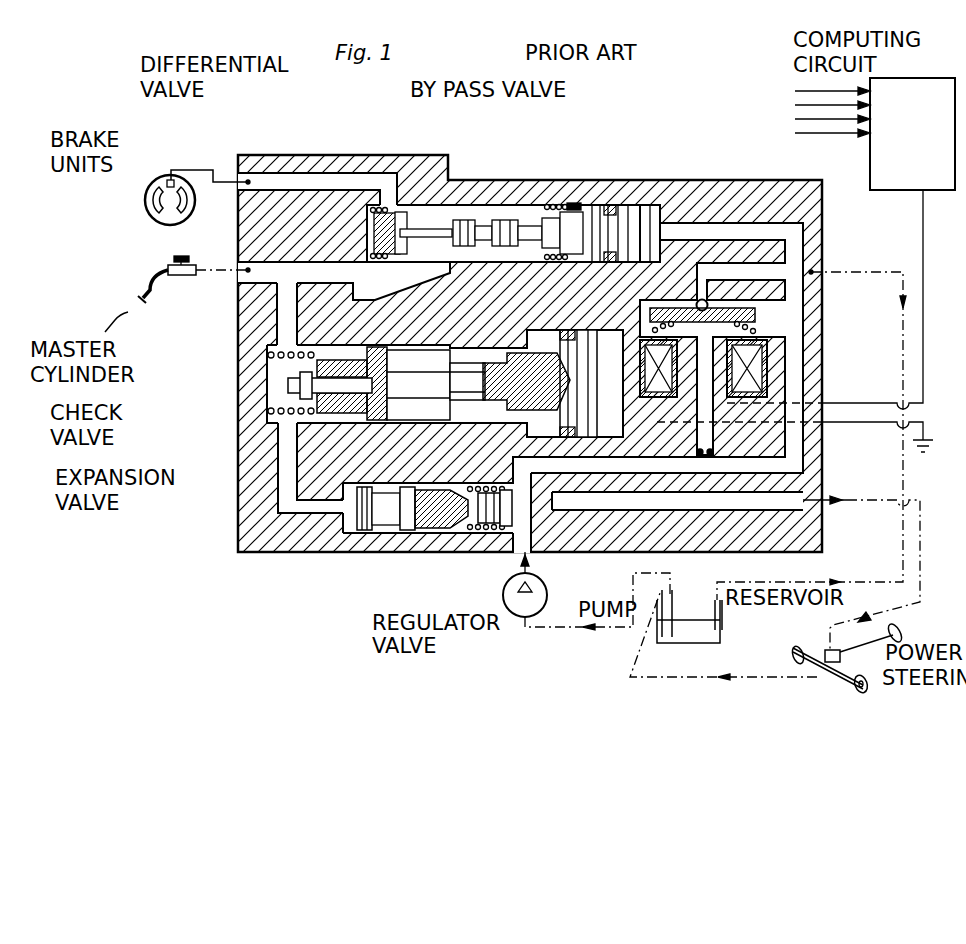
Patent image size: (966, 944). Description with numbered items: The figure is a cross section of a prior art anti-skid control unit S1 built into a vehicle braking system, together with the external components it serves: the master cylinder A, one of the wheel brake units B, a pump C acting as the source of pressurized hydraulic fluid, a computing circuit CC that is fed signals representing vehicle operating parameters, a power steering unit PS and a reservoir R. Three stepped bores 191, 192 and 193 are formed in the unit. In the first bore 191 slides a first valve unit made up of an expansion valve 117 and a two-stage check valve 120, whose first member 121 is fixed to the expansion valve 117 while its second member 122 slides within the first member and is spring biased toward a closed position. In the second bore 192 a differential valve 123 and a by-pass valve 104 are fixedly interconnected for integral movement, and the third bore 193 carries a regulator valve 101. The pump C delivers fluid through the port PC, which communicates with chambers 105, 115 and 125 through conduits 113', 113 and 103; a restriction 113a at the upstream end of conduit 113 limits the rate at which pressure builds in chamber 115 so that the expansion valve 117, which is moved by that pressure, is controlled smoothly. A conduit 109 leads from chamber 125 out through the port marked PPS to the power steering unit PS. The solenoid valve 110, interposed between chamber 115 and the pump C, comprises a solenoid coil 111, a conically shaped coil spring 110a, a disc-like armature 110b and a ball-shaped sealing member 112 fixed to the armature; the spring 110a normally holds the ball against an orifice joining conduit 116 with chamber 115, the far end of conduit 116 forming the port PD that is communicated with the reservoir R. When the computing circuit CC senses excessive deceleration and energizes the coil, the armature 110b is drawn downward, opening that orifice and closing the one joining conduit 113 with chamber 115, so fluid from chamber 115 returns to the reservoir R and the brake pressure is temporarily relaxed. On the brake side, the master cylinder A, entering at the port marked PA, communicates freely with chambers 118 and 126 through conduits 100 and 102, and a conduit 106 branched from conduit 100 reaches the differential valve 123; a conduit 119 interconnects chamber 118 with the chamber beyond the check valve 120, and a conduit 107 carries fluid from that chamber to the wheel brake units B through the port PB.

The conduit 100 is at (262, 265).
The regulator valve 101 is at (464, 553).
The conduit 102 is at (297, 552).
The conduit 103 is at (630, 467).
The by-pass valve 104 is at (493, 205).
The chamber 105 is at (650, 207).
The conduit 106 is at (262, 224).
The conduit 107 is at (359, 185).
The conduit 109 is at (697, 540).
The solenoid valve 110 is at (778, 352).
The conically shaped coil spring 110a is at (760, 333).
The disc like armature member 110b is at (758, 315).
The solenoid coil 111 is at (748, 383).
The sealing member 112 is at (703, 297).
The conduit 113 is at (681, 397).
The conduit 113' is at (799, 429).
The restriction 113a is at (707, 500).
The chamber 115 is at (607, 343).
The conduit 116 is at (753, 268).
The expansion valve 117 is at (282, 466).
The chamber 118 is at (262, 355).
The conduit 119 is at (400, 285).
The check valve 120 is at (178, 398).
The first member 121 is at (272, 437).
The second member 122 is at (272, 408).
The differential valve 123 is at (358, 237).
The chamber 125 is at (565, 545).
The chamber 126 is at (350, 553).
The first stepped bore 191 is at (508, 330).
The second stepped bore 192 is at (573, 203).
The third stepped bore 193 is at (430, 553).
The master cylinder A is at (152, 329).
The wheel brake units B is at (147, 190).
The pump C is at (548, 598).
The reservoir R is at (748, 636).
The power steering unit PS is at (920, 714).
The computing circuit CC is at (940, 76).
The control unit S1 is at (627, 130).
The master cylinder port PA is at (240, 271).
The port PB is at (240, 182).
The port PC is at (533, 560).
The port PD is at (822, 271).
The power steering port PPS is at (823, 495).